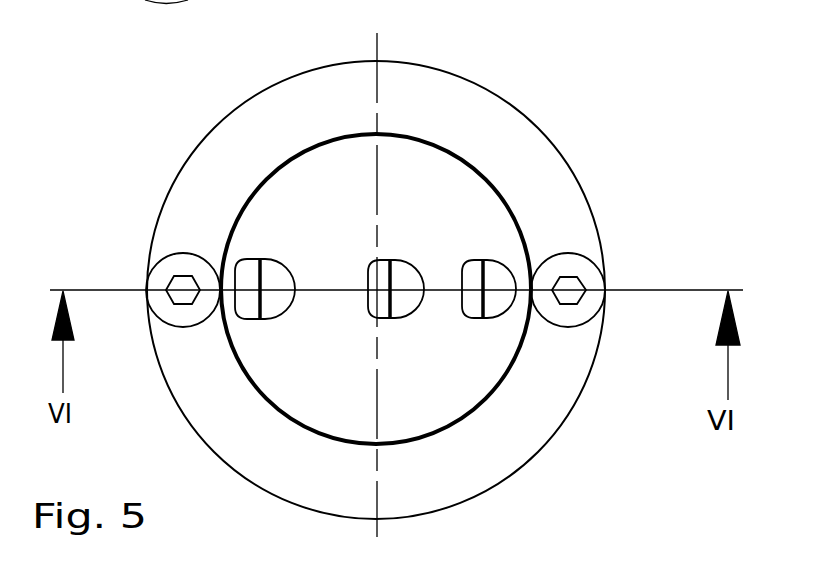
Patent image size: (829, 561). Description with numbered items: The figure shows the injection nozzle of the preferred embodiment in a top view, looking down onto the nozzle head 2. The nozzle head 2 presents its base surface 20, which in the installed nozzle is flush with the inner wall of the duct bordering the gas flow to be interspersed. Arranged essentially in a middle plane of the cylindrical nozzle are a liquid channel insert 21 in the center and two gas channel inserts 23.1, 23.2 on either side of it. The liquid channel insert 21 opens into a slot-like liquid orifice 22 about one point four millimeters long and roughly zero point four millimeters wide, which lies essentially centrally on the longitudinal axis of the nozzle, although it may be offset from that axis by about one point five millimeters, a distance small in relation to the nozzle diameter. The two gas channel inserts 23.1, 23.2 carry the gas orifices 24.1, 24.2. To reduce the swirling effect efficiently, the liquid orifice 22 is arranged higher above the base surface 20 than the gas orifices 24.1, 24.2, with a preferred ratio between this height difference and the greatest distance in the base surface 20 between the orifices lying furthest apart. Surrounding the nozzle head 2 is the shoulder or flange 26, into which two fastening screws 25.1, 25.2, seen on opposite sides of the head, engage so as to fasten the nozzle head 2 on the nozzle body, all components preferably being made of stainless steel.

The nozzle head 2 is at (606, 91).
The base surface 20 is at (362, 182).
The liquid channel insert 21 is at (402, 303).
The liquid orifice 22 is at (394, 272).
The gas channel insert 23.1 is at (271, 302).
The gas channel insert 23.2 is at (497, 303).
The gas orifice 24.1 is at (263, 268).
The gas orifice 24.2 is at (478, 272).
The fastening screw 25.1 is at (163, 272).
The fastening screw 25.2 is at (588, 277).
The shoulder or flange 26 is at (491, 137).